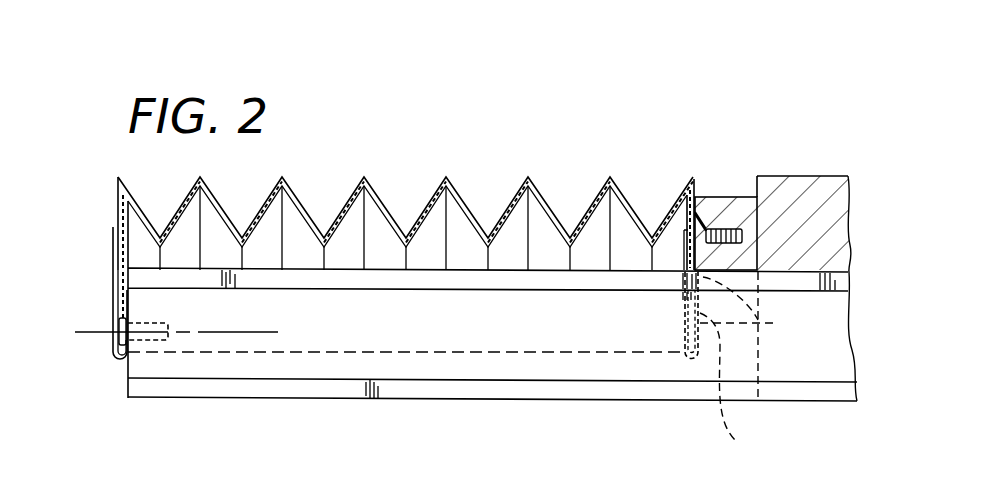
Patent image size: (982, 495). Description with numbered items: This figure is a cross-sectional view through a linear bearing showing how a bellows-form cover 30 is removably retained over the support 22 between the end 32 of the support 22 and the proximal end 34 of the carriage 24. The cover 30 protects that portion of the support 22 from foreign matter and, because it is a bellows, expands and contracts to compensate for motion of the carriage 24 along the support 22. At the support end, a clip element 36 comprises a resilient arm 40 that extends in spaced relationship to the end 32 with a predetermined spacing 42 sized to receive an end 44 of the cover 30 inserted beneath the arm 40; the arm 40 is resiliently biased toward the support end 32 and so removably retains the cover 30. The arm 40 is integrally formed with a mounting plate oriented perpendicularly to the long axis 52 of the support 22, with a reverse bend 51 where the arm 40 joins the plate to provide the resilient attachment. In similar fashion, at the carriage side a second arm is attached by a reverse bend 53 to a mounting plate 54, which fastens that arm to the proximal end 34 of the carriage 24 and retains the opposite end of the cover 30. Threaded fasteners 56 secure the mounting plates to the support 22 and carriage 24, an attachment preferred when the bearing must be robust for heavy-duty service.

The support 22 is at (553, 394).
The carriage 24 is at (815, 185).
The cover 30 is at (448, 180).
The end of support 32 is at (124, 372).
The proximal end of carriage 34 is at (735, 440).
The clip element 36 is at (111, 170).
The resilient arm 40 is at (114, 258).
The predetermined spacing 42 is at (122, 308).
The end of cover 44 is at (119, 215).
The reverse bend 51 is at (122, 360).
The long axis 52 is at (93, 333).
The reverse bend 53 is at (690, 362).
The mounting plate 54 is at (775, 323).
The threaded fasteners 56 is at (713, 232).